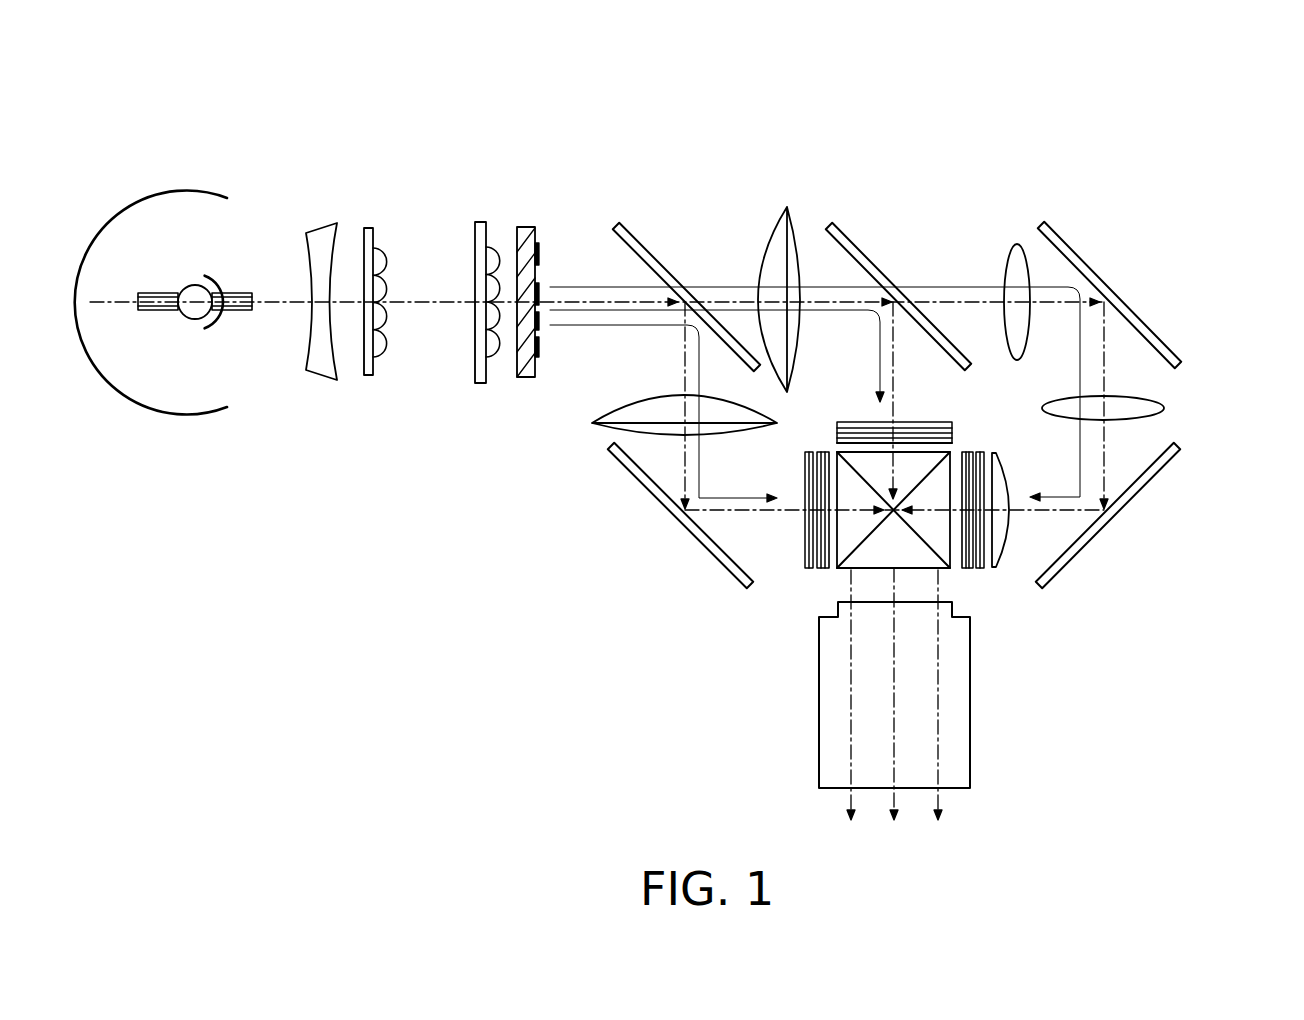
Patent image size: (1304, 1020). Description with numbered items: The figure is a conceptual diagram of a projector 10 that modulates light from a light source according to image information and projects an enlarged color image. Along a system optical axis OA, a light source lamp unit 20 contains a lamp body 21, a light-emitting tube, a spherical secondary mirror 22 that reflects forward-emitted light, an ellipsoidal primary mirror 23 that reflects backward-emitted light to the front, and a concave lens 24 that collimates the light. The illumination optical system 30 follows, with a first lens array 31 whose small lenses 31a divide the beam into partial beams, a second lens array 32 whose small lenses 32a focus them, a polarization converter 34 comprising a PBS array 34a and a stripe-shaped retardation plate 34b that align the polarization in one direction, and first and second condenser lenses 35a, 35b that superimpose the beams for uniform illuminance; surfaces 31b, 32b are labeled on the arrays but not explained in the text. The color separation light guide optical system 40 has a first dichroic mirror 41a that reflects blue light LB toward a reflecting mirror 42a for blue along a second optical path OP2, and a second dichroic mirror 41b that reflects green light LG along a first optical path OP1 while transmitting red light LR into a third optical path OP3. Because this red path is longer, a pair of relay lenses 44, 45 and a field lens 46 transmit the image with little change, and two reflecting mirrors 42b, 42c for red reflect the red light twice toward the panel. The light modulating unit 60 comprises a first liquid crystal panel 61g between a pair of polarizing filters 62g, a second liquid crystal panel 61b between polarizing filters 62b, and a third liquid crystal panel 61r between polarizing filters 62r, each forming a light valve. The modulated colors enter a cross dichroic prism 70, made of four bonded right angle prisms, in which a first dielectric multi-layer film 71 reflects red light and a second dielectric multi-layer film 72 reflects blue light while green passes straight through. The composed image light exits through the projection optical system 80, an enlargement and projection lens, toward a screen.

The projector 10 is at (1292, 87).
The light source lamp unit 20 is at (240, 165).
The lamp body 21 is at (147, 293).
The secondary mirror 22 is at (200, 282).
The primary mirror 23 is at (171, 357).
The concave lens 24 is at (322, 372).
The illumination optical system 30 is at (469, 474).
The first lens array 31 is at (369, 228).
The small lenses 31a is at (380, 262).
The back surface of first lens array 31b is at (385, 350).
The second lens array 32 is at (481, 222).
The small lenses 32a is at (488, 260).
The back surface of second lens array 32b is at (492, 358).
The polarization converter 34 is at (534, 248).
The PBS array 34a is at (522, 240).
The retardation plate 34b is at (540, 260).
The first condenser lens 35a is at (775, 236).
The second condenser lens 35b is at (645, 403).
The color separation light guide optical system 40 is at (1148, 290).
The first dichroic mirror 41a is at (657, 252).
The second dichroic mirror 41b is at (850, 238).
The reflecting mirror for blue 42a is at (645, 510).
The reflecting mirror for red 42b is at (1075, 252).
The reflecting mirror for red 42c is at (1136, 500).
The relay lens 44 is at (1017, 247).
The relay lens 45 is at (1156, 410).
The field lens 46 is at (1007, 478).
The light modulating unit 60 is at (1026, 656).
The first liquid crystal panel 61g is at (838, 424).
The second liquid crystal panel 61b is at (820, 572).
The third liquid crystal panel 61r is at (963, 560).
The polarizing filters 62g is at (952, 426).
The polarizing filters 62b is at (818, 575).
The polarizing filters 62r is at (985, 556).
The cross dichroic prism 70 is at (878, 588).
The first dielectric multi-layer film 71 is at (827, 572).
The second dielectric multi-layer film 72 is at (978, 570).
The projection optical system 80 is at (970, 735).
The system optical axis OA is at (437, 293).
The first optical path OP1 is at (878, 326).
The second optical path OP2 is at (699, 440).
The third optical path OP3 is at (1080, 330).
The green light LG is at (896, 360).
The blue light LB is at (734, 512).
The red light LR is at (1108, 352).